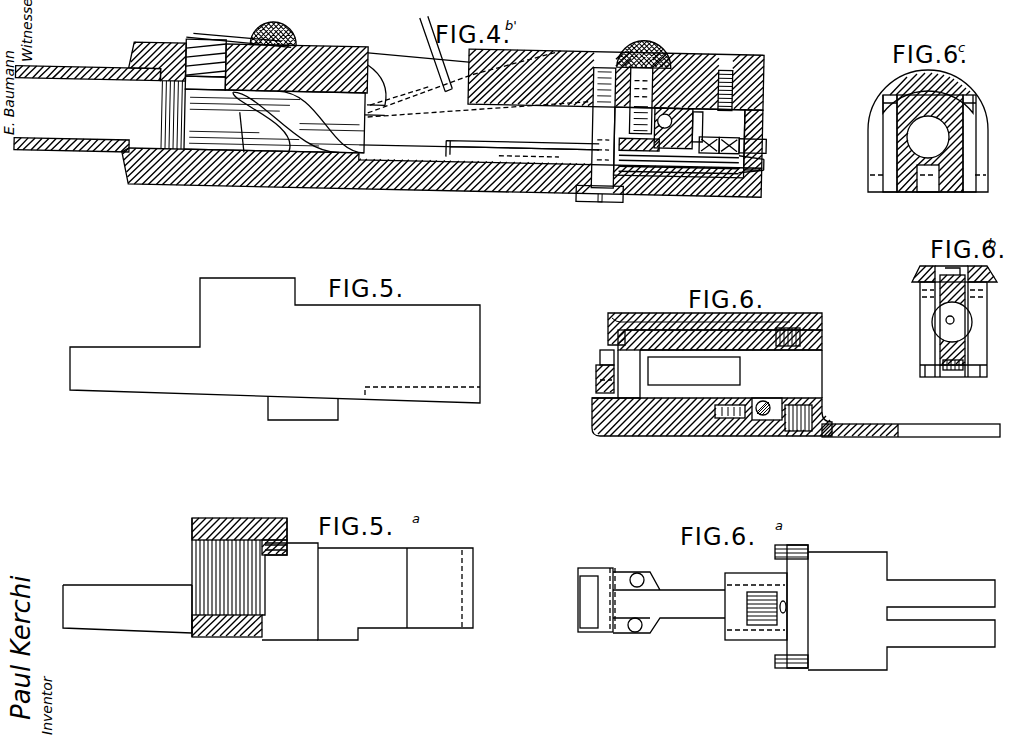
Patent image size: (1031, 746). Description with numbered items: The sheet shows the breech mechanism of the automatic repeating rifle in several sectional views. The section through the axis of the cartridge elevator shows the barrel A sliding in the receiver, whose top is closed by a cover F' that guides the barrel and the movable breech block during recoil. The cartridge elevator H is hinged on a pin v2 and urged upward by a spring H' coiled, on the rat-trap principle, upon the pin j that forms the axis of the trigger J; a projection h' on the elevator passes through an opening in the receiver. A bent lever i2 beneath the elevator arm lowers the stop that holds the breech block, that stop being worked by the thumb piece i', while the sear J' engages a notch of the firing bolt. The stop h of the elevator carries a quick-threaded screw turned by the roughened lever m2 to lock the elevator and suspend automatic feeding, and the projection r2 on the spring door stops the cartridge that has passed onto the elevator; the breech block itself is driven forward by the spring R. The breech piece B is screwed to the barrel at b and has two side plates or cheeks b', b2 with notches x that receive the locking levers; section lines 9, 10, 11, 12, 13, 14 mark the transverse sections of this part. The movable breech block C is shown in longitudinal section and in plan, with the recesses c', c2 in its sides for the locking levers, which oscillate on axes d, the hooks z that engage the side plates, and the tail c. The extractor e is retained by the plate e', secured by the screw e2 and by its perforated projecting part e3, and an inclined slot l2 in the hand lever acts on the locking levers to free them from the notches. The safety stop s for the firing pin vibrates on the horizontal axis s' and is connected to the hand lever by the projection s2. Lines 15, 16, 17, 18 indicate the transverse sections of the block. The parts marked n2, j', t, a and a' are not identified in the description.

In FIG. 4B', the barrel A is at (87, 109).
In FIG. 4B', the cover F' is at (442, 135).
In FIG. 4B', the stop of the elevator h is at (200, 49).
In FIG. 4B', the roughened projection or lever m2 is at (242, 25).
In FIG. 4B', the cartridge elevator H is at (274, 121).
In FIG. 4B', the bore groove n2 is at (242, 132).
In FIG. 4B', the projection of the spring door r2 is at (376, 90).
In FIG. 4B', the spring R is at (480, 68).
In FIG. 4B', the spring of the elevator H' is at (608, 149).
In FIG. 4B', the bent lever i2 is at (622, 135).
In FIG. 4B', the pin v2 is at (603, 143).
In FIG. 4B', the thumb piece or projection i' is at (643, 77).
In FIG. 4B', the pin forming the axis of the trigger j is at (727, 84).
In FIG. 4B', the projection on the elevator h' is at (673, 128).
In FIG. 4B', the inclined slot l2 is at (699, 127).
In FIG. 4B', the sear J' is at (713, 137).
In FIG. 4B', the cross pin j' is at (735, 136).
In FIG. 4B', the trigger J is at (757, 145).
In FIG. 5, the breech piece B is at (275, 349).
In FIG. 5A, the breech piece B is at (367, 591).
In FIG. 5, the side plate or cheek b2 is at (409, 350).
In FIG. 5A, the connection of barrel to breech piece b is at (231, 577).
In FIG. 5A, the side plate or cheek b' is at (375, 588).
In FIG. 5A, the notches x is at (426, 589).
In FIG. 5, the section line 9—10 9 is at (128, 347).
In FIG. 5, the section line 9— 10 is at (125, 392).
In FIG. 5, the section line 11—12 11 is at (246, 310).
In FIG. 5, the section line 11— 12 is at (242, 370).
In FIG. 5, the section line 13—14 13 is at (315, 322).
In FIG. 5, the section line 13— 14 is at (310, 388).
In FIG. 6, the movable breech block C is at (712, 389).
In FIG. 6B, the movable breech block C is at (953, 326).
In FIG. 6A, the movable breech block C is at (682, 604).
In FIG. 6C, the movable breech block C is at (928, 131).
In FIG. 6, the plate e' is at (715, 323).
In FIG. 6B, the plate e' is at (951, 265).
In FIG. 6C, the plate e' is at (895, 78).
In FIG. 6B, the extractor e is at (981, 264).
In FIG. 6, the screw e2 is at (701, 338).
In FIG. 6A, the screw e2 is at (801, 607).
In FIG. 6C, the screw e2 is at (930, 118).
In FIG. 6, the projecting part of the plate e3 is at (605, 367).
In FIG. 6B, the projecting part of the plate e3 is at (990, 296).
In FIG. 6, the section line 15—16 15 is at (745, 318).
In FIG. 6, the section line 15— 16 is at (733, 435).
In FIG. 6, the section line 17—18 17 is at (800, 330).
In FIG. 6, the section line 17— 18 is at (797, 435).
In FIG. 6, the slot t is at (726, 429).
In FIG. 6, the safety stop s is at (798, 413).
In FIG. 6, the horizontal axis s' is at (769, 405).
In FIG. 6, the projection s2 is at (767, 413).
In FIG. 6, the tail of the movable breech block c is at (911, 422).
In FIG. 6A, the tail of the movable breech block c is at (901, 611).
In FIG. 6, the recess c' is at (867, 446).
In FIG. 6B, the recess c' is at (975, 348).
In FIG. 6A, the recess c' is at (669, 581).
In FIG. 6B, the recess c2 is at (928, 348).
In FIG. 6A, the recess c2 is at (669, 626).
In FIG. 6B, the lug a is at (942, 327).
In FIG. 6B, the lug a' is at (986, 273).
In FIG. 6A, the axes of the locking levers d is at (642, 574).
In FIG. 6A, the projections or hooks z is at (781, 608).
In FIG. 6C, the projections or hooks z is at (927, 143).